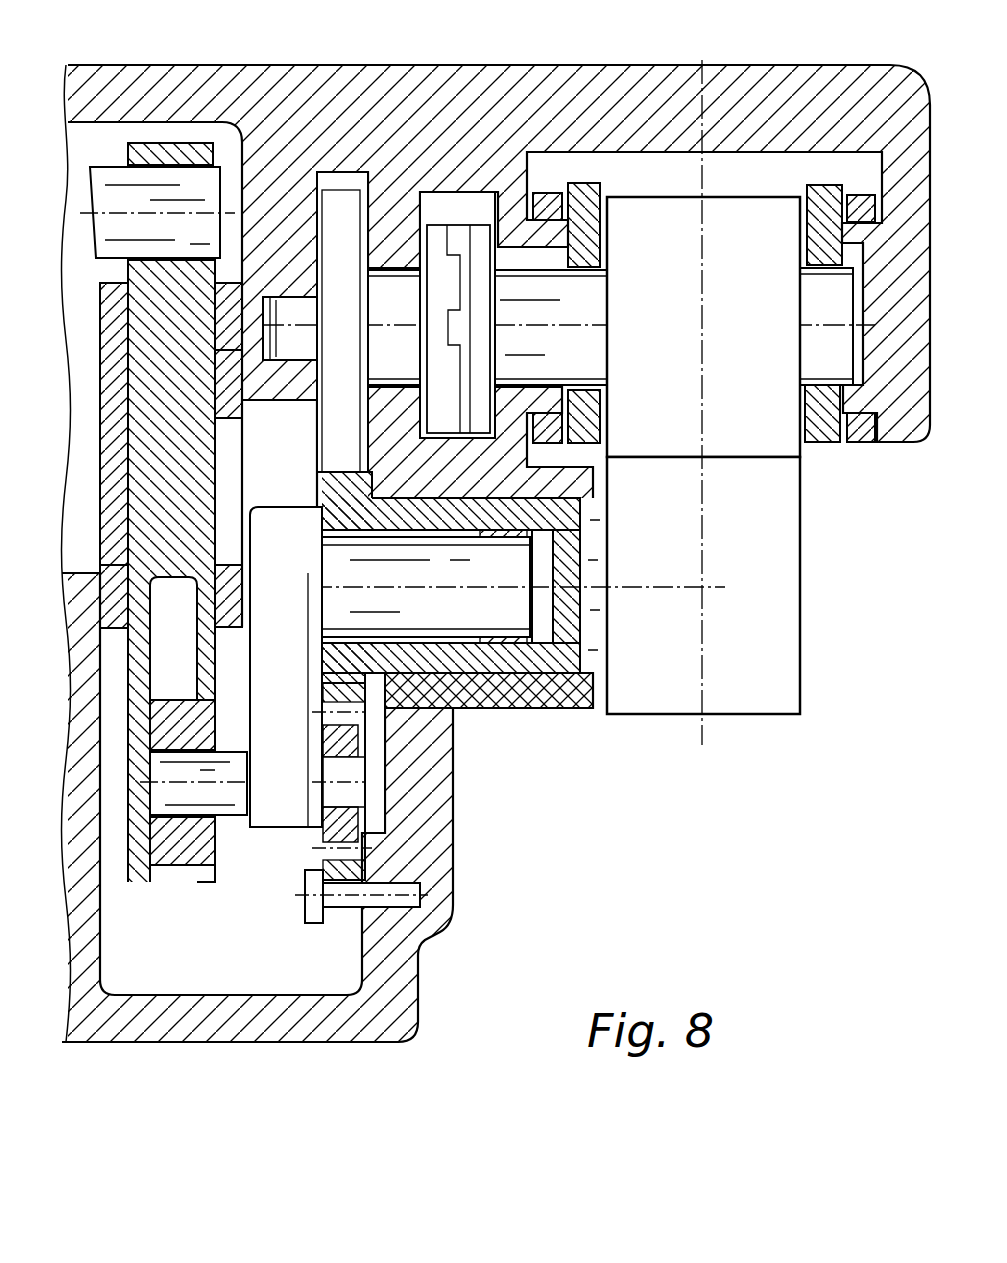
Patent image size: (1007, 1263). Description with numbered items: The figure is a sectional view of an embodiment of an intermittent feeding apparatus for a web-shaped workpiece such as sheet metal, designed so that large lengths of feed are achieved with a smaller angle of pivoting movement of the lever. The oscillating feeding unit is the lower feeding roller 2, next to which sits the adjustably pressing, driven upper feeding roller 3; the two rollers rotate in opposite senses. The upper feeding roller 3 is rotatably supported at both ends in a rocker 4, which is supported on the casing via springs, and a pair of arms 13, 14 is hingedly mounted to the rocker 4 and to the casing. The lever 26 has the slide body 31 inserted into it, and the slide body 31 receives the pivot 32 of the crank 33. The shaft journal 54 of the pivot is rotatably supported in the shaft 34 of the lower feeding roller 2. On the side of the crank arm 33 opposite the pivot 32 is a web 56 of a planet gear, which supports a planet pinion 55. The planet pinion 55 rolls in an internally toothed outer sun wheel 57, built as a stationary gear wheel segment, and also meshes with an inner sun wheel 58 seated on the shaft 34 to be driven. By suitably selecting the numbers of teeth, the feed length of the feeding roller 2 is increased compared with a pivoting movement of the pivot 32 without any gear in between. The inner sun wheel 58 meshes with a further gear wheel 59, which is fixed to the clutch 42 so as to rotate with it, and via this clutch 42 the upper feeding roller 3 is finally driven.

The lower feeding roller 2 is at (778, 662).
The upper feeding roller 3 is at (760, 420).
The rocker 4 is at (818, 223).
The arm 13 is at (858, 218).
The arm 14 is at (548, 195).
The lever 26 is at (178, 400).
The slide body 31 is at (166, 700).
The pivot 32 is at (182, 798).
The crank 33 is at (287, 647).
The shaft 34 is at (575, 665).
The clutch 42 is at (470, 290).
The shaft journal 54 is at (490, 603).
The planet pinion 55 is at (387, 830).
The web 56 is at (318, 820).
The outer sun wheel 57 is at (345, 912).
The inner sun wheel 58 is at (345, 655).
The gear wheel 59 is at (340, 242).